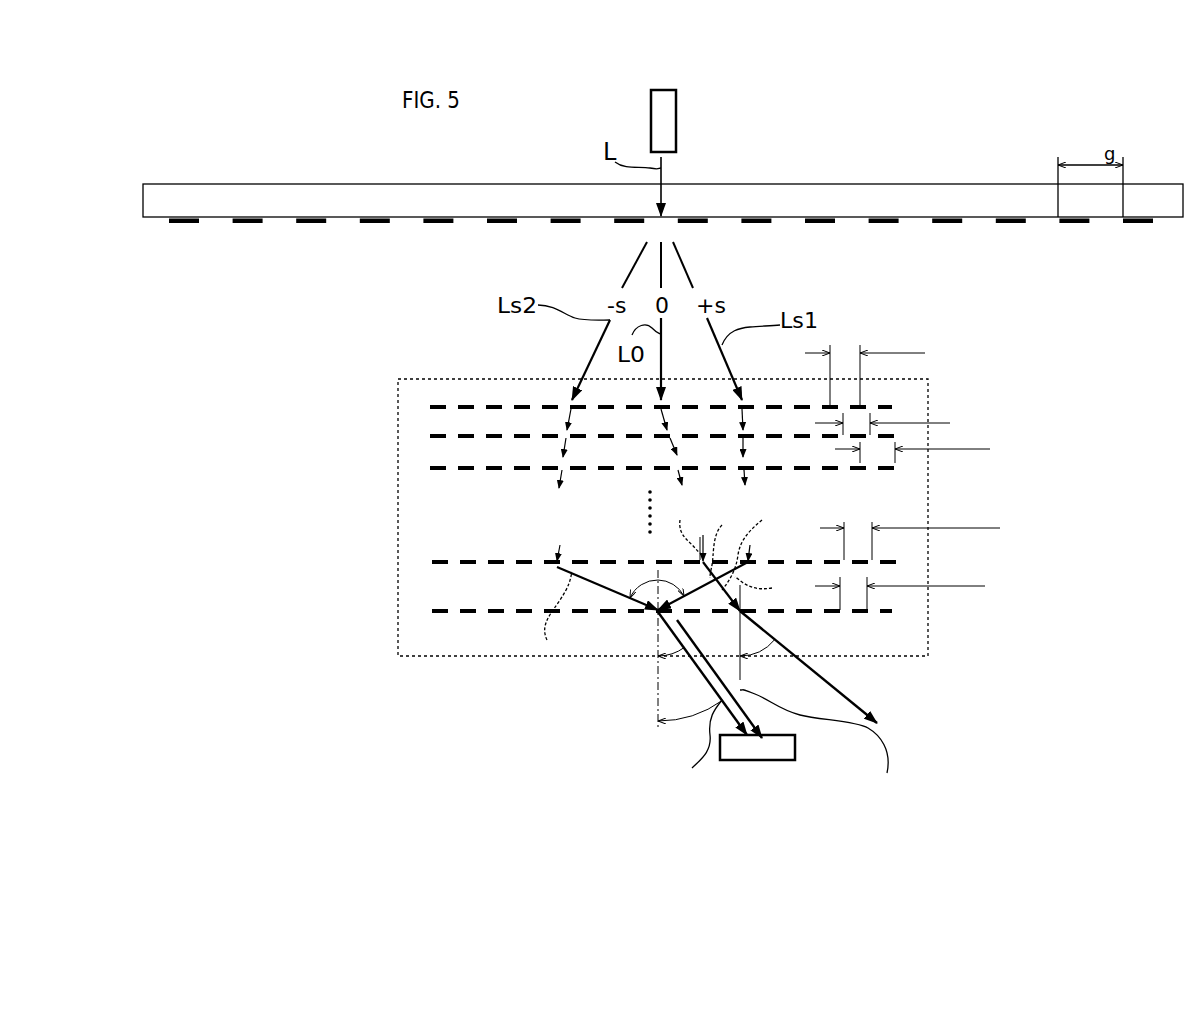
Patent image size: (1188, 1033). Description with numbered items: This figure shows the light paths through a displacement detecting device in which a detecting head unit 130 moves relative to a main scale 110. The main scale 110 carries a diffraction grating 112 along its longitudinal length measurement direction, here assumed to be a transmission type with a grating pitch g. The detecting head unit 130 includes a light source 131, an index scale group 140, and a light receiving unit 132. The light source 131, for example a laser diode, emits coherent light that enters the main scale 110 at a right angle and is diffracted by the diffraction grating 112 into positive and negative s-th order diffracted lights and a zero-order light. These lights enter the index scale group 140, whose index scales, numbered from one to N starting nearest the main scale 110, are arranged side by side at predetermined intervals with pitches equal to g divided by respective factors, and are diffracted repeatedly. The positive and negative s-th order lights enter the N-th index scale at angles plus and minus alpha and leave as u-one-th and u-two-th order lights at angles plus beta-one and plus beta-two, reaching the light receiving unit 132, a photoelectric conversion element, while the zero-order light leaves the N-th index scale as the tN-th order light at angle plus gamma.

The main scale 110 is at (270, 196).
The diffraction grating 112 is at (313, 225).
The light source 131 is at (667, 113).
The light receiving unit 132 is at (780, 748).
The index scale group 140 is at (930, 633).
The detecting head unit 130 is at (997, 698).